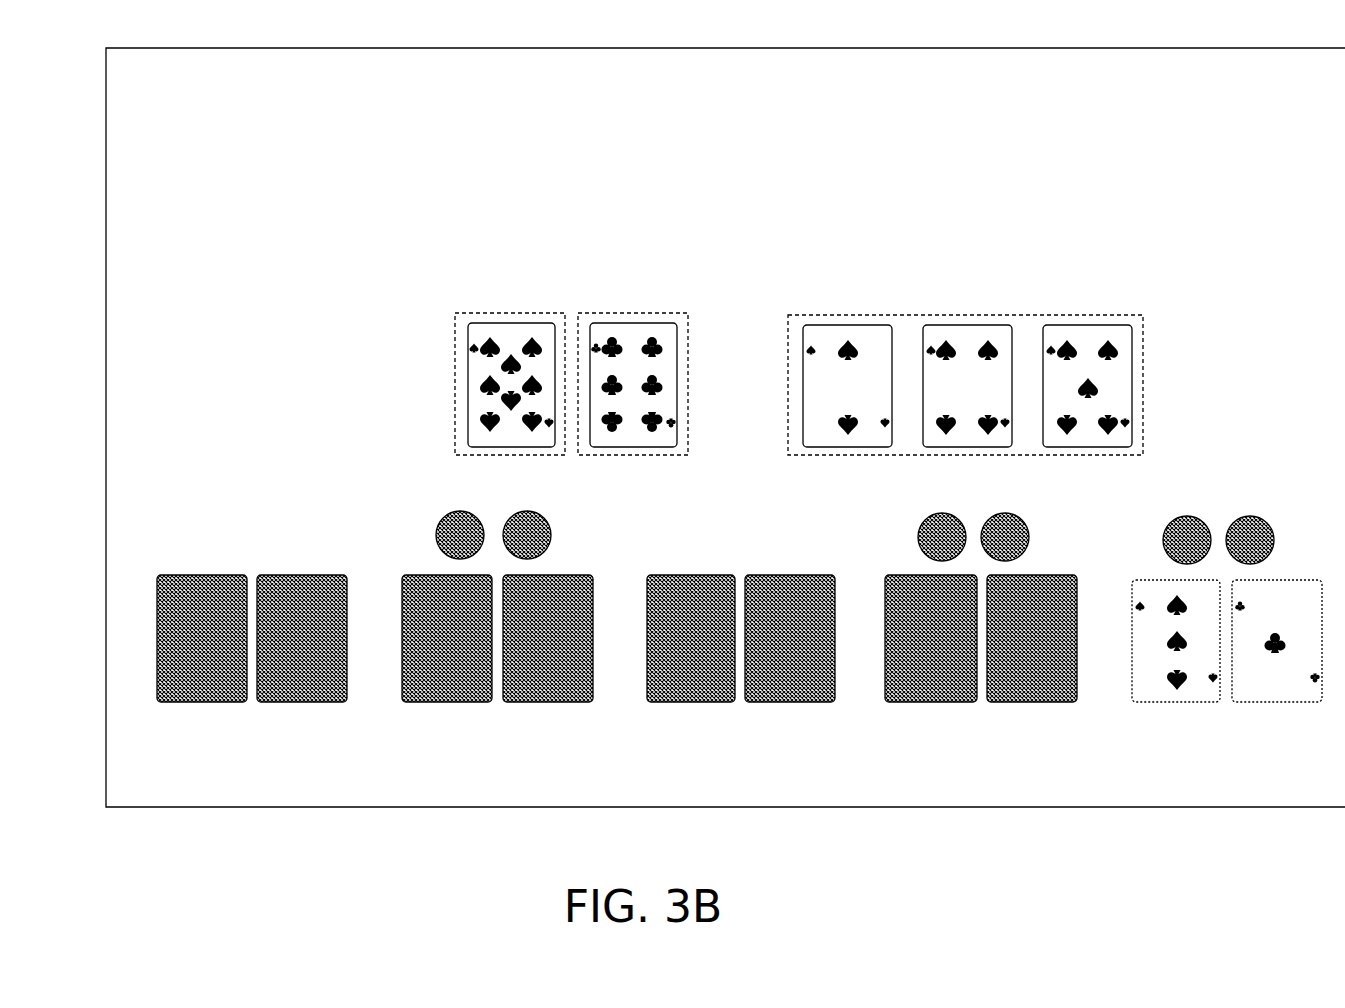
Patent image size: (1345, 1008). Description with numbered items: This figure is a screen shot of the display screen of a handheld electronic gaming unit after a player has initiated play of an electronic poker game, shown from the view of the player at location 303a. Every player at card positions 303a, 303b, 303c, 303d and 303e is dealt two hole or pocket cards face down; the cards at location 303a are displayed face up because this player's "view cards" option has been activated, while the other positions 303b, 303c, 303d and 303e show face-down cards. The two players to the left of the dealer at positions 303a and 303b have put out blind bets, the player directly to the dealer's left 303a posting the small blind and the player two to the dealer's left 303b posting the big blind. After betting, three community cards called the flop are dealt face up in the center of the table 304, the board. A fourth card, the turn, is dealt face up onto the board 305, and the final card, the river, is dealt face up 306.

The board 304 is at (965, 312).
The fourth card on the board 305 is at (632, 312).
The final card dealt face up 306 is at (511, 312).
The card position 303a is at (1227, 627).
The card position 303b is at (981, 626).
The card position 303c is at (741, 657).
The card position 303d is at (497, 625).
The card position 303e is at (252, 657).